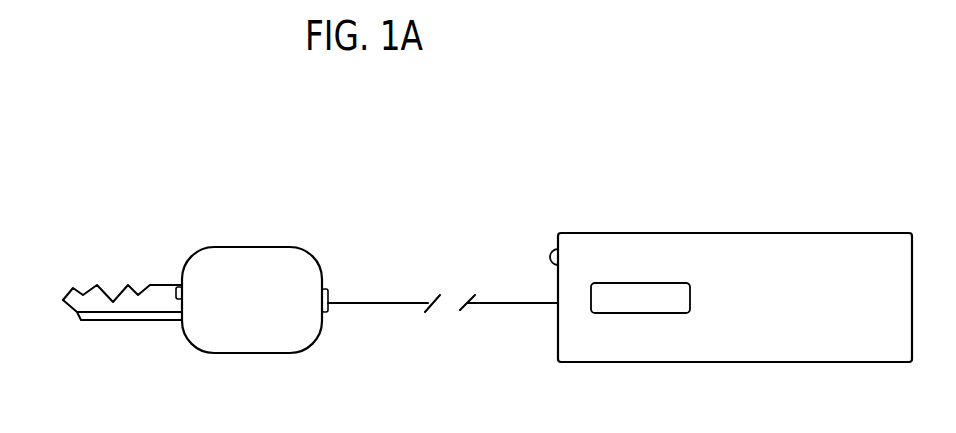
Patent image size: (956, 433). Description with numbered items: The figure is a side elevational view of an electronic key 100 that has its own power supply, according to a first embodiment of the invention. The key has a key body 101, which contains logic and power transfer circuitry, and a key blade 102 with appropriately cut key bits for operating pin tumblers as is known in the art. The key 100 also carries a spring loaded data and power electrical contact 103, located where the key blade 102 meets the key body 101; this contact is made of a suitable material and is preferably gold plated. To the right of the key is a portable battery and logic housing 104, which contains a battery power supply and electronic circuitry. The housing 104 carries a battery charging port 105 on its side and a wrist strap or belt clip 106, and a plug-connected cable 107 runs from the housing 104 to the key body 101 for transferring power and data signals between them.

The electronic key 100 is at (344, 142).
The key body 101 is at (273, 260).
The key blade 102 is at (66, 320).
The spring loaded data and power electrical contact 103 is at (178, 287).
The portable battery and logic housing 104 is at (794, 308).
The battery charging port 105 is at (551, 250).
The wrist strap or belt clip 106 is at (640, 300).
The plug-connected cable 107 is at (505, 307).